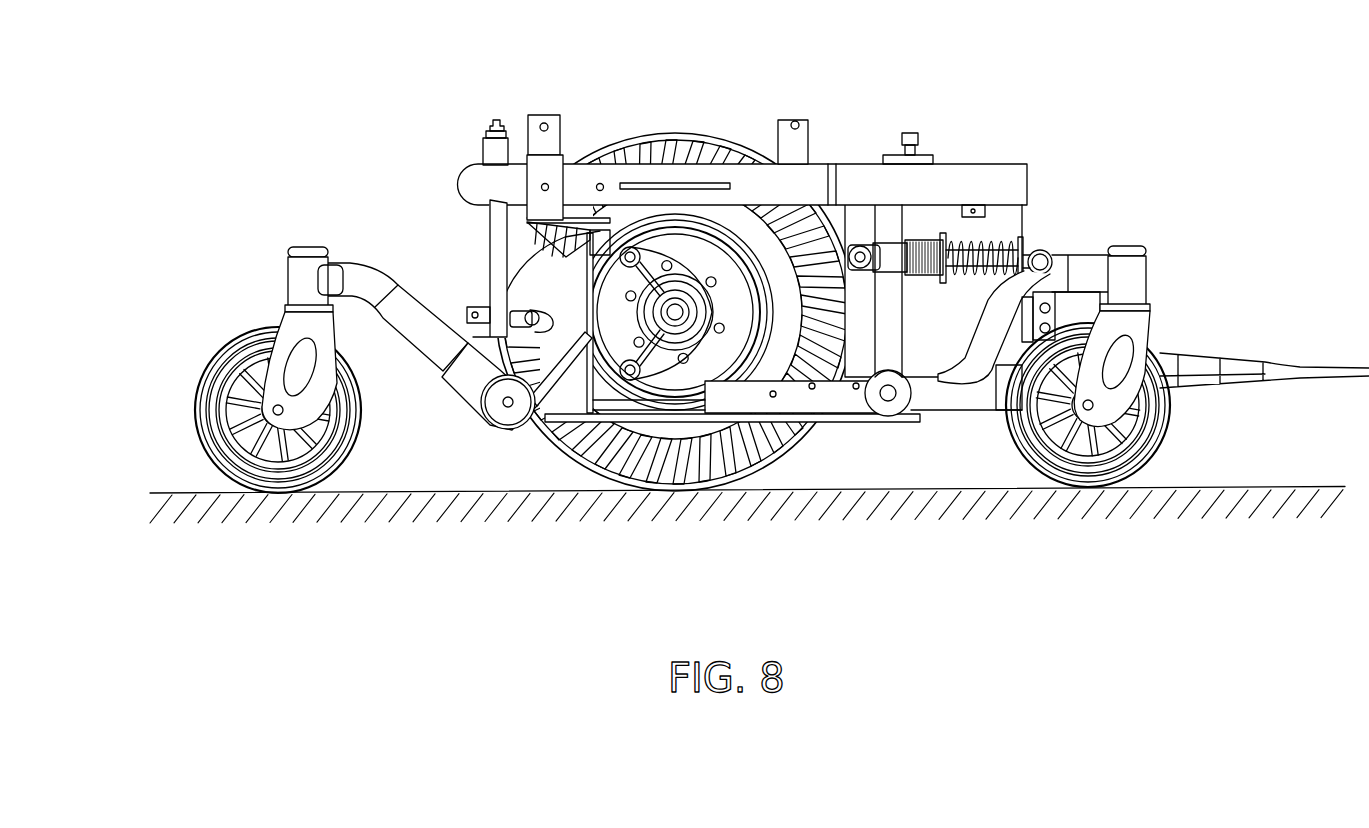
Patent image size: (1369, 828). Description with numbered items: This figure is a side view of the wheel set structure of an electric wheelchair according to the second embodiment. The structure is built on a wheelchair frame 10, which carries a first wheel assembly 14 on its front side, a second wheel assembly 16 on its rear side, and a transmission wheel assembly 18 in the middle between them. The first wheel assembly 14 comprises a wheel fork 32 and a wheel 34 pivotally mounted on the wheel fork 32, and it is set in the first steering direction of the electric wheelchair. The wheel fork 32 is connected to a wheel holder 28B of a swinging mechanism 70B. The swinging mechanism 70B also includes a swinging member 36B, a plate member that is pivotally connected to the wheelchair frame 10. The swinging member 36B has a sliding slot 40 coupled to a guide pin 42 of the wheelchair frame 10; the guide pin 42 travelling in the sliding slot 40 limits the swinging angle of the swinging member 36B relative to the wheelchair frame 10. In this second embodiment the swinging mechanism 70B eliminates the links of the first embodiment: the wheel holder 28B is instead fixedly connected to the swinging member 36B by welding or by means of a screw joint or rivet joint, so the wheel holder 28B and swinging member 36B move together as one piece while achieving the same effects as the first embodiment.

The wheelchair frame 10 is at (982, 162).
The first wheel assembly 14 is at (229, 370).
The second wheel assembly 16 is at (1173, 427).
The transmission wheel assembly 18 is at (785, 457).
The wheel holder 28B is at (408, 323).
The wheel fork 32 is at (277, 347).
The wheel 34 is at (193, 407).
The swinging member 36B is at (547, 415).
The sliding slot 40 is at (522, 311).
The guide pin 42 is at (531, 314).
The swinging mechanism 70B is at (459, 449).